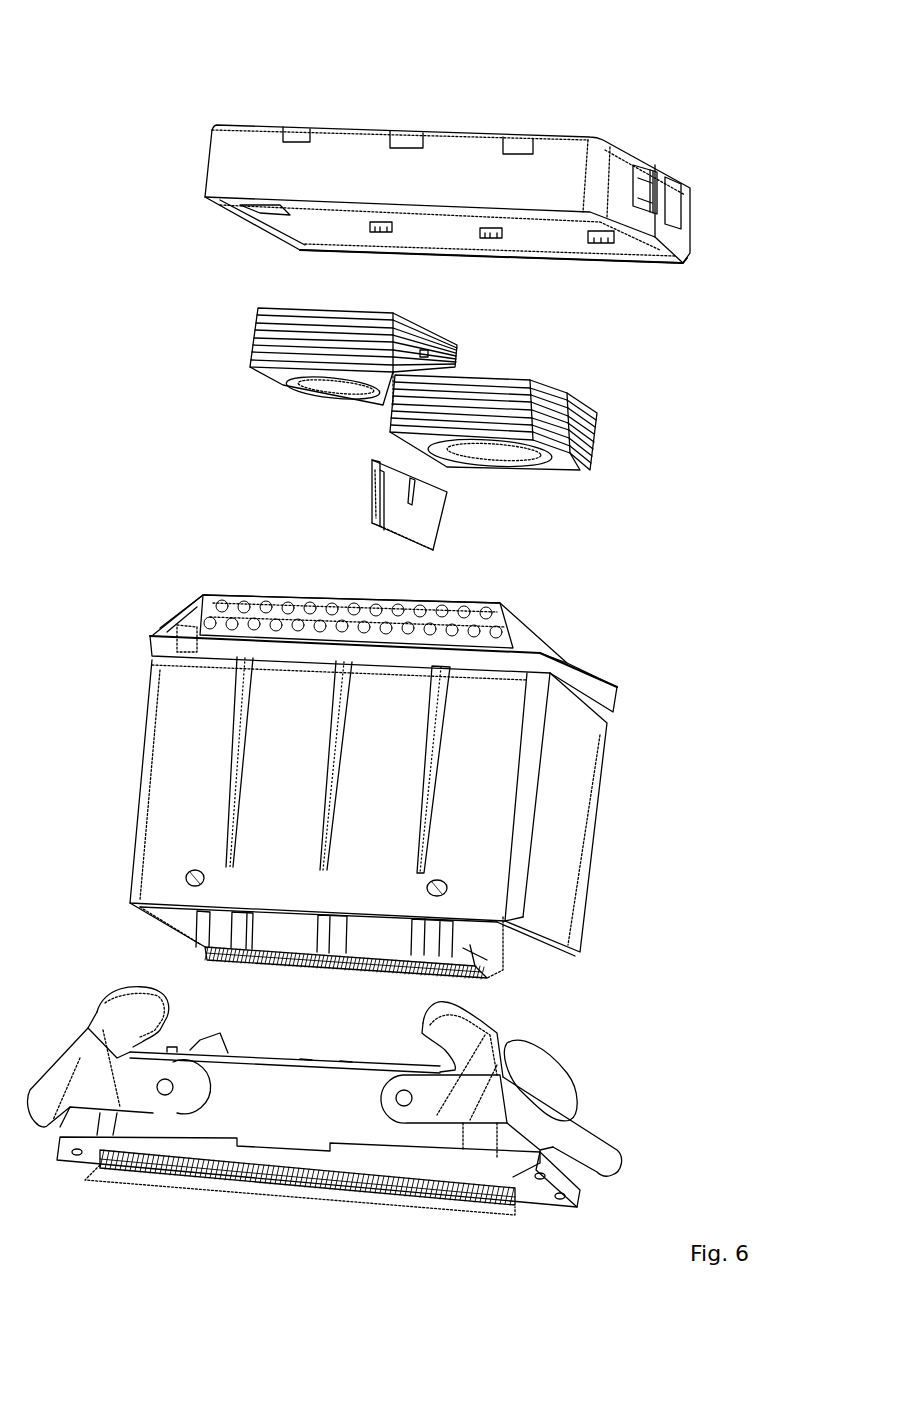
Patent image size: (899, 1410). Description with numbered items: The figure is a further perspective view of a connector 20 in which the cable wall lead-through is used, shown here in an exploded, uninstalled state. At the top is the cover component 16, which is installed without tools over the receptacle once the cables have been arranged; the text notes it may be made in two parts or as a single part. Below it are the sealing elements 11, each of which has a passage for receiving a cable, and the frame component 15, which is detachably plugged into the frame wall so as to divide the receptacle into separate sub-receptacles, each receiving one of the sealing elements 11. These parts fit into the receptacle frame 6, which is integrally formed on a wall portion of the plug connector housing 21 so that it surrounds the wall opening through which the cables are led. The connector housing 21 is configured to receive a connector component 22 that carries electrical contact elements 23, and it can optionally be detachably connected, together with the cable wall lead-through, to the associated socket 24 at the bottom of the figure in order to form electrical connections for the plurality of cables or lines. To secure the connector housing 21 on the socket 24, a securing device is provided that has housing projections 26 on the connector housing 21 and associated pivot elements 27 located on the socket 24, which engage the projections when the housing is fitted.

The cover component 16 is at (253, 126).
The sealing elements 11 is at (580, 433).
The frame component 15 is at (427, 525).
The plug connector housing 21 is at (187, 773).
The receptacle frame 6 is at (217, 603).
The housing projections 26 is at (203, 880).
The connector component 22 is at (487, 945).
The electrical contact elements 23 is at (470, 972).
The socket 24 is at (303, 1133).
The pivot elements 27 is at (120, 1017).
The connector 20 is at (730, 164).